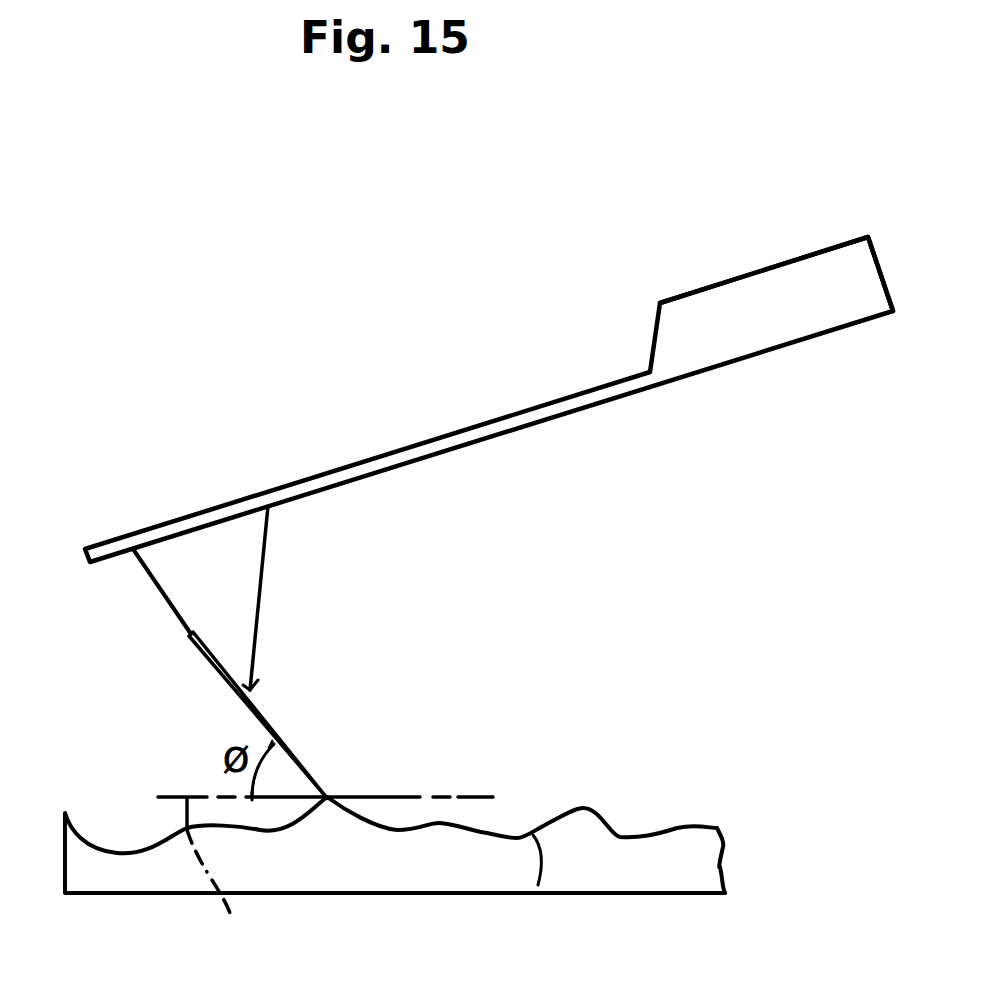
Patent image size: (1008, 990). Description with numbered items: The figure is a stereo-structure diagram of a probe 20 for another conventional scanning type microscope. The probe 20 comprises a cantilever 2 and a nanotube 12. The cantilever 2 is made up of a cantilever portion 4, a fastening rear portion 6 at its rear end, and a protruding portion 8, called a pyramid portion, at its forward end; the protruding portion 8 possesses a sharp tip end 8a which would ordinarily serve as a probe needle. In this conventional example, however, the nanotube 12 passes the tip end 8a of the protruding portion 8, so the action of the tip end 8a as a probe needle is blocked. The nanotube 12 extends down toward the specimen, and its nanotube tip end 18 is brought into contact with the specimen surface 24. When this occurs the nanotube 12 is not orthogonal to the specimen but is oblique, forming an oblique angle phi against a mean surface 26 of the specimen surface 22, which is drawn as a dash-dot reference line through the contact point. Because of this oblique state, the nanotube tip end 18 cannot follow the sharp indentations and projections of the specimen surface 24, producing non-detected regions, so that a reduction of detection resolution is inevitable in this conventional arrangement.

The cantilever 2 is at (393, 452).
The cantilever portion 4 is at (525, 412).
The fastening rear portion 6 is at (742, 302).
The protruding portion 8 is at (232, 563).
The tip end 8a is at (252, 690).
The nanotube 12 is at (273, 725).
The nanotube tip end 18 is at (330, 795).
The probe 20 is at (543, 345).
The specimen surface 22 is at (380, 860).
The specimen surface 24 is at (538, 885).
The mean surface 26 is at (229, 884).